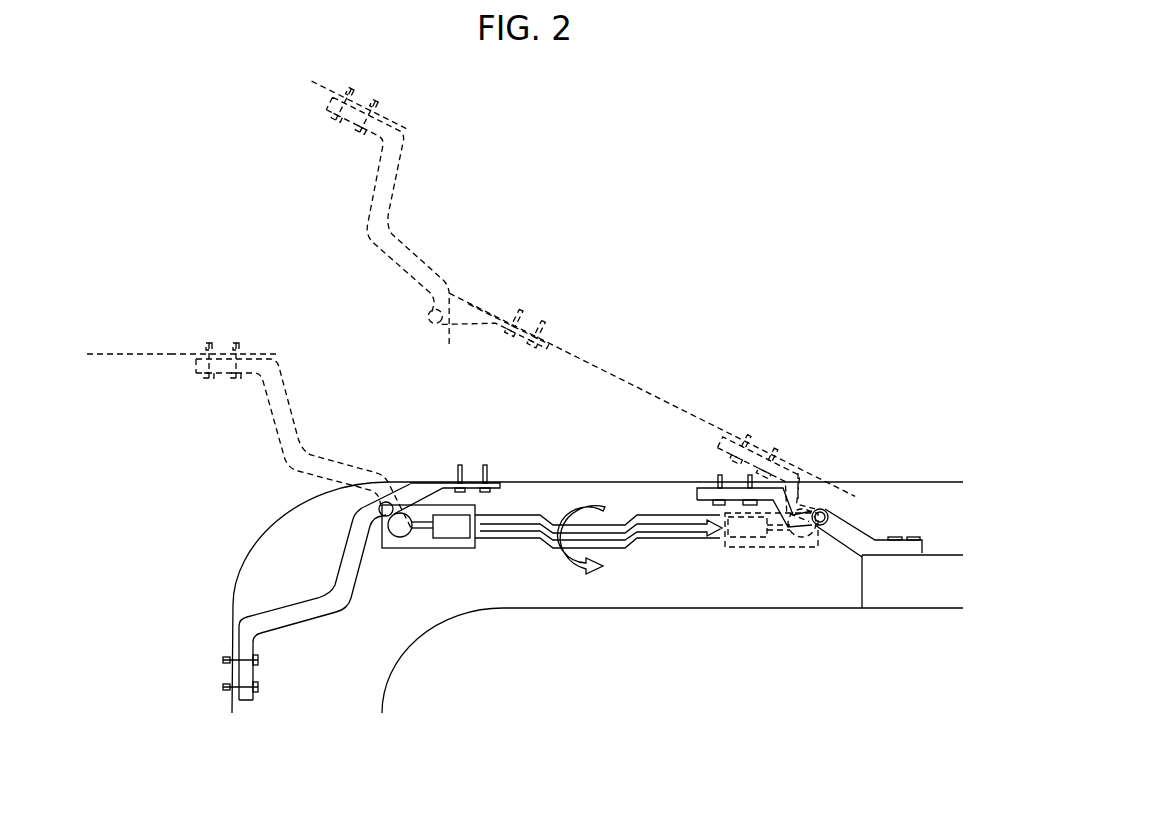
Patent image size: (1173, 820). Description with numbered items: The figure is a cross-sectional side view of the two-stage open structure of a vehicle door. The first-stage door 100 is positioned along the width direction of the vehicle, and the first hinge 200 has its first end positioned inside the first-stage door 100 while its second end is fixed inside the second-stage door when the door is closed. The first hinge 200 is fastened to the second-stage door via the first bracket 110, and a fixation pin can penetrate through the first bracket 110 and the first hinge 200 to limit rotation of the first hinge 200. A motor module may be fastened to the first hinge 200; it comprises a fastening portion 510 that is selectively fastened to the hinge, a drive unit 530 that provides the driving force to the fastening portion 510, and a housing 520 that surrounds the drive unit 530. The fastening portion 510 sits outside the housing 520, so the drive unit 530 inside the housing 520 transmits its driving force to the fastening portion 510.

The first-stage door 100 is at (232, 637).
The first bracket 110 is at (418, 493).
The first hinge 200 is at (280, 620).
The fastening portion 510 is at (398, 532).
The housing 520 is at (435, 550).
The drive unit 530 is at (458, 540).